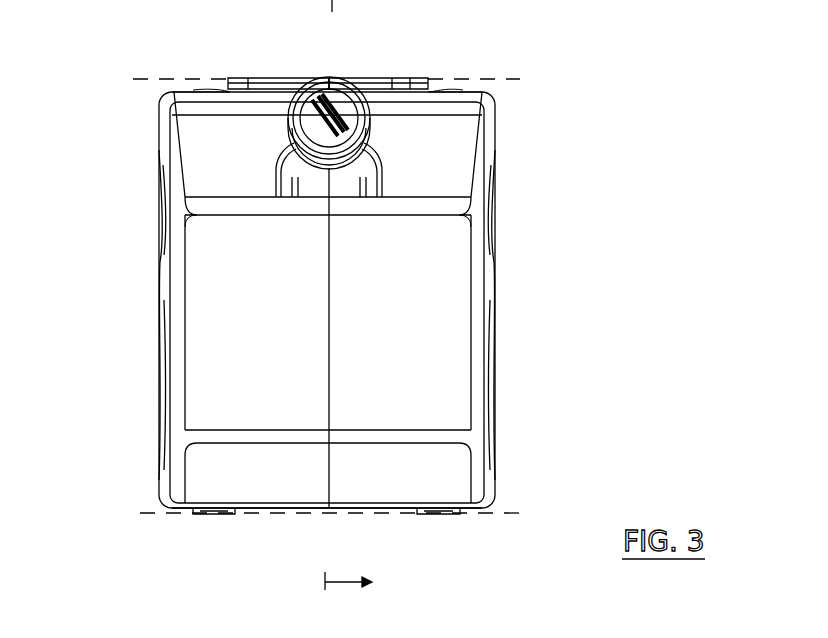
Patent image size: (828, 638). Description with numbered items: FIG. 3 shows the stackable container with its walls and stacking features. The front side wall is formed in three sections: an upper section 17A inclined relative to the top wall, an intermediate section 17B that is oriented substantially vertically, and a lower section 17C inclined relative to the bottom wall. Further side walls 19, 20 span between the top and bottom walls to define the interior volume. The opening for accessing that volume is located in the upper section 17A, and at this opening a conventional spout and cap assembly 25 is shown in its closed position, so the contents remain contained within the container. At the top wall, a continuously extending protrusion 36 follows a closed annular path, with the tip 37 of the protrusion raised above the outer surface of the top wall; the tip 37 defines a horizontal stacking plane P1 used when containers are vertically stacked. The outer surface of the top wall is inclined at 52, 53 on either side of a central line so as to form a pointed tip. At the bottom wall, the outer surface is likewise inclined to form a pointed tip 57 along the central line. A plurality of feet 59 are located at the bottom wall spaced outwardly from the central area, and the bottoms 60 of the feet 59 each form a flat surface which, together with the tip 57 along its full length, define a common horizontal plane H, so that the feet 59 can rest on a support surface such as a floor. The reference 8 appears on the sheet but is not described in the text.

The lateral axis 8 is at (334, 584).
The upper section 17A is at (450, 155).
The intermediate section 17B is at (433, 330).
The lower section 17C is at (458, 470).
The side wall 19 is at (158, 250).
The side wall 20 is at (495, 250).
The spout and cap assembly 25 is at (288, 118).
The protrusion 36 is at (390, 78).
The tip of the protrusion 37 is at (266, 78).
The inclined portion of top wall outer surface 52 is at (193, 90).
The inclined portion of top wall outer surface 53 is at (463, 90).
The tip of the bottom wall 57 is at (330, 512).
The feet 59 is at (212, 533).
The bottoms of the feet 60 is at (438, 518).
The horizontal stacking plane P1 is at (516, 79).
The common horizontal plane H is at (507, 512).